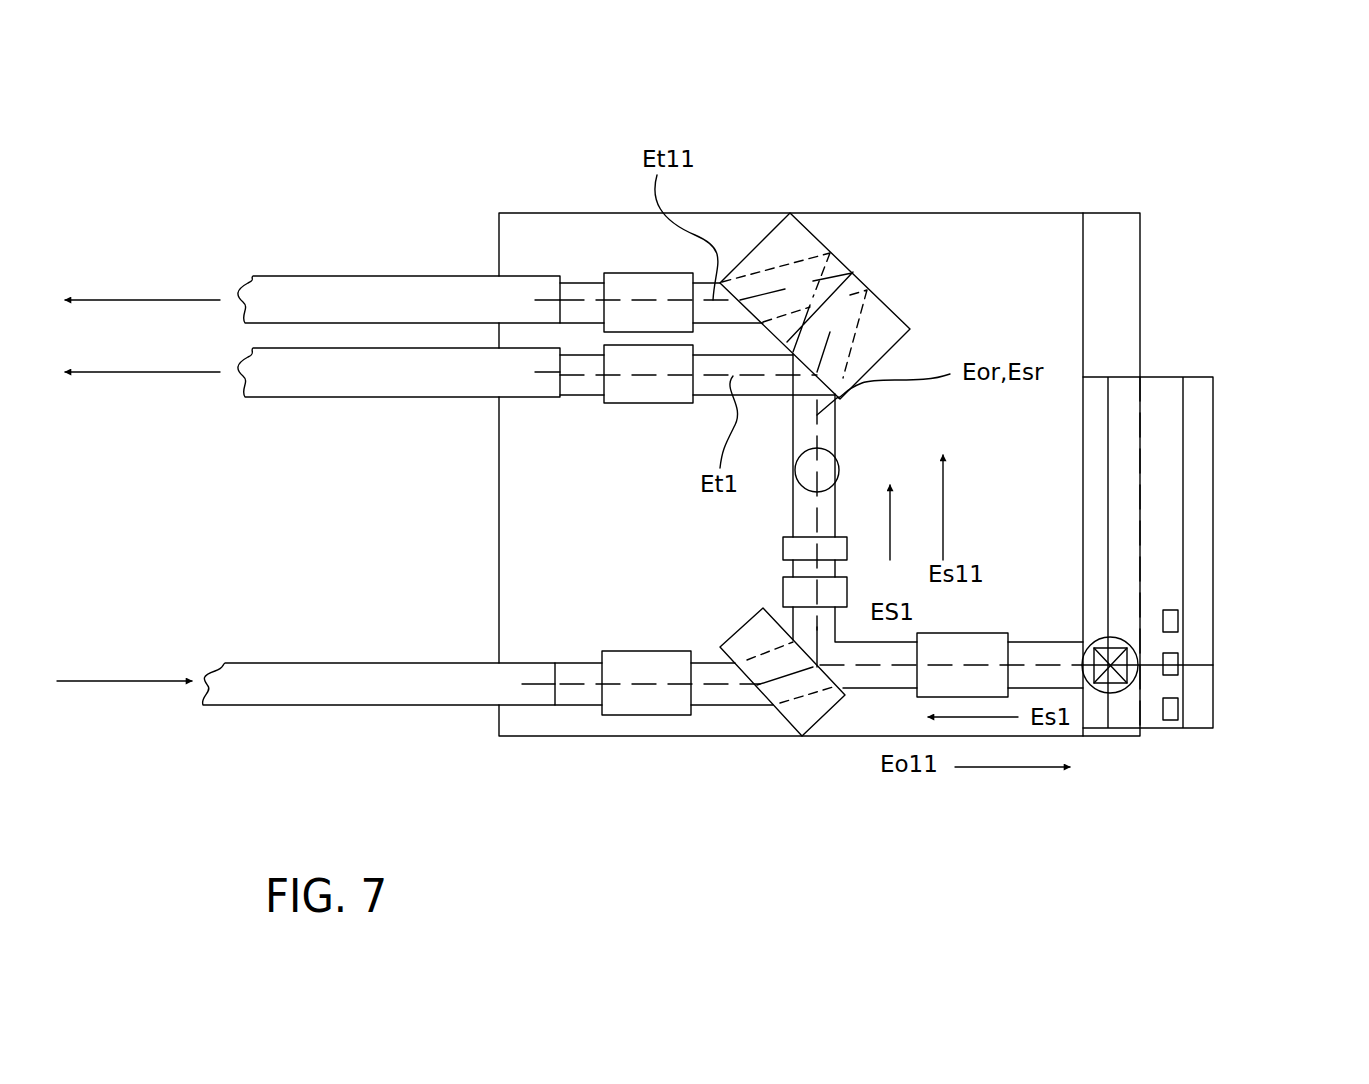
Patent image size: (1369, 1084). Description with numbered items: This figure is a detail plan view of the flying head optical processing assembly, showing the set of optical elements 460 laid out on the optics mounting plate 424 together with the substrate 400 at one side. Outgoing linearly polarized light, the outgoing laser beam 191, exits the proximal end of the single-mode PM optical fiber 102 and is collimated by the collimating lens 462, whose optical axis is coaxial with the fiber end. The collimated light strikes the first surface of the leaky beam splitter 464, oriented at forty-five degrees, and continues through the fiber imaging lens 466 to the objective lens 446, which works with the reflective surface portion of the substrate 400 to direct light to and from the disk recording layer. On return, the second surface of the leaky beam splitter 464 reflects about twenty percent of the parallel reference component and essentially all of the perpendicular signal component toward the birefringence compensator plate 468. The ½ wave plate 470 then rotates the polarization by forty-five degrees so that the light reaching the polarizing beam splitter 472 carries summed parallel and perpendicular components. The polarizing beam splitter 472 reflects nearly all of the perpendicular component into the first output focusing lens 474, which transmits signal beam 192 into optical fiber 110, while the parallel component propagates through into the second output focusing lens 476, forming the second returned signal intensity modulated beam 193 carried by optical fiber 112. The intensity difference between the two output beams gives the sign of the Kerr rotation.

The single-mode PM optical fiber 102 is at (418, 705).
The optical fiber 110 is at (285, 397).
The optical fiber 112 is at (300, 276).
The outgoing laser beam 191 is at (124, 666).
The signal beam 192 is at (142, 357).
The second returned signal intensity modulated beam 193 is at (142, 284).
The substrate 400 is at (1213, 512).
The optics mounting plate 424 is at (962, 213).
The objective lens 446 is at (1137, 713).
The set of optical elements 460 is at (833, 447).
The collimating lens 462 is at (650, 717).
The leaky beam splitter 464 is at (822, 715).
The fiber imaging lens 466 is at (983, 633).
The birefringence compensator plate 468 is at (783, 588).
The ½ wave plate 470 is at (783, 550).
The polarizing beam splitter 472 is at (762, 240).
The first output focusing lens 474 is at (612, 403).
The second output focusing lens 476 is at (625, 273).